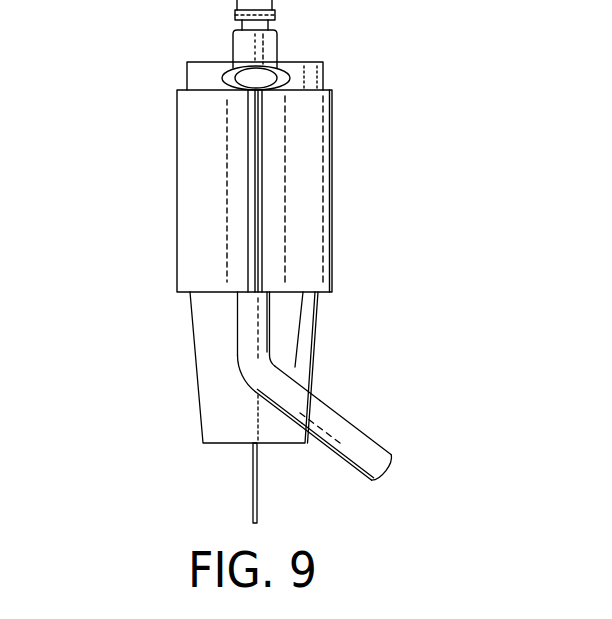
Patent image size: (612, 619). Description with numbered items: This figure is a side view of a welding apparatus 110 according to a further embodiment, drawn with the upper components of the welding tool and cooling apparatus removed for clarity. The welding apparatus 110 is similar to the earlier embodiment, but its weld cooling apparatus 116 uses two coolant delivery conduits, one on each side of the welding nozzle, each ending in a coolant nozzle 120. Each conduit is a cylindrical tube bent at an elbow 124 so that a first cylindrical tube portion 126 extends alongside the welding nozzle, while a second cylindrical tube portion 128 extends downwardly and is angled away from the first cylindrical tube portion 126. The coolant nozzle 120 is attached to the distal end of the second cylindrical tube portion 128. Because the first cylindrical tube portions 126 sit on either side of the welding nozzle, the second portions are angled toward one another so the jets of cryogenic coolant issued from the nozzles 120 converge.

The welding apparatus 110 is at (146, 68).
The weld cooling apparatus 116 is at (402, 323).
The coolant nozzle 120 is at (345, 455).
The elbow 124 is at (250, 392).
The first cylindrical tube portion 126 is at (239, 313).
The second cylindrical tube portion 128 is at (268, 398).